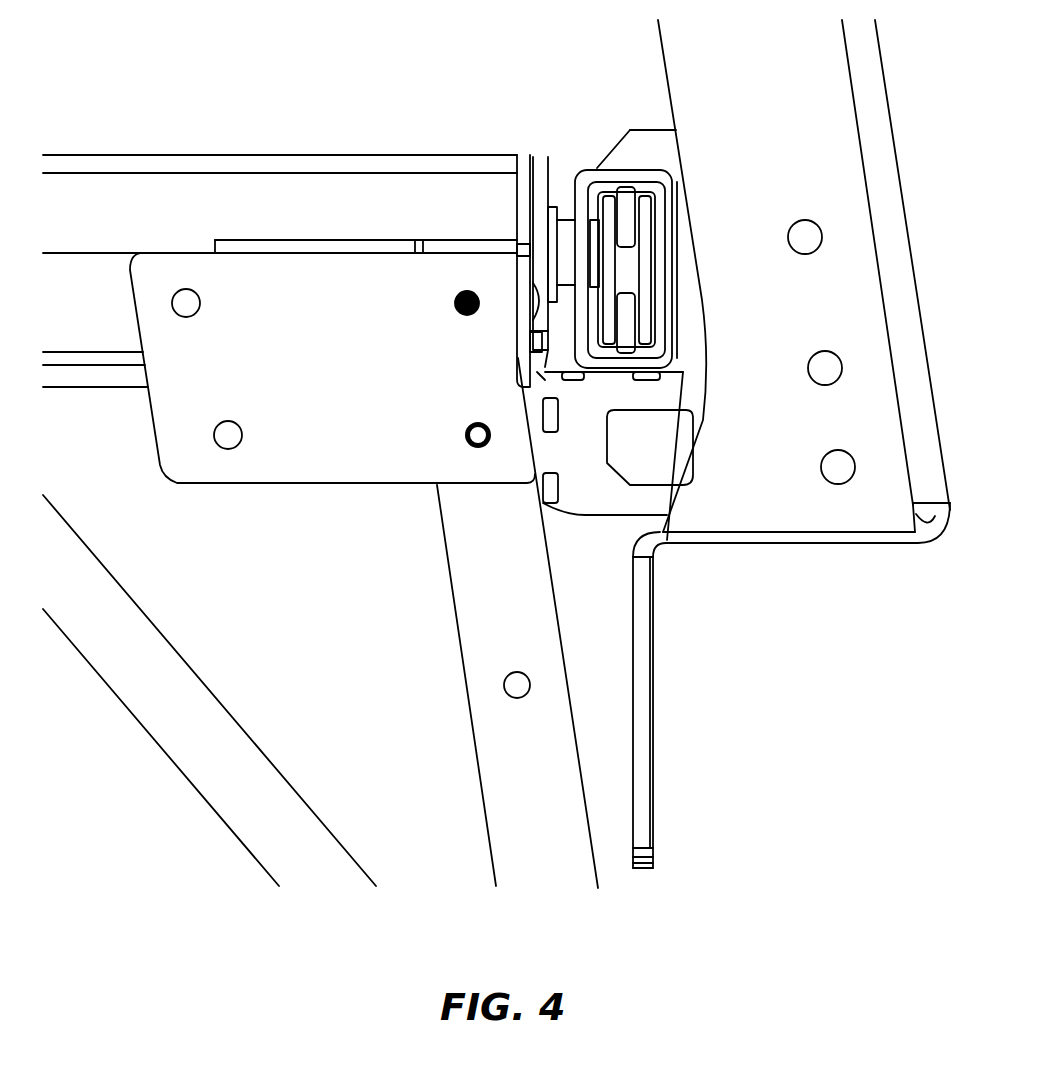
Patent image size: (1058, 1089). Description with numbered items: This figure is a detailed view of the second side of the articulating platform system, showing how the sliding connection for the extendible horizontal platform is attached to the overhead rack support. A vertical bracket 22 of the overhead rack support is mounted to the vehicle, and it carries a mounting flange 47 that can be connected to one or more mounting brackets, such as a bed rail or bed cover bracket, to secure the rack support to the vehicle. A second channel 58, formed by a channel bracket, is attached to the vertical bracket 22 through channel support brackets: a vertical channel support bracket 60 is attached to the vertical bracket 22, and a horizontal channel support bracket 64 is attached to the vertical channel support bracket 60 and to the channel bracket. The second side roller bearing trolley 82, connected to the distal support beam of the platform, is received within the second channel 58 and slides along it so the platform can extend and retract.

The vertical bracket 22 is at (823, 183).
The second channel 58 is at (645, 142).
The second side roller bearing trolley 82 is at (620, 208).
The vertical channel support bracket 60 is at (632, 492).
The horizontal channel support bracket 64 is at (643, 380).
The mounting flange 47 is at (643, 800).